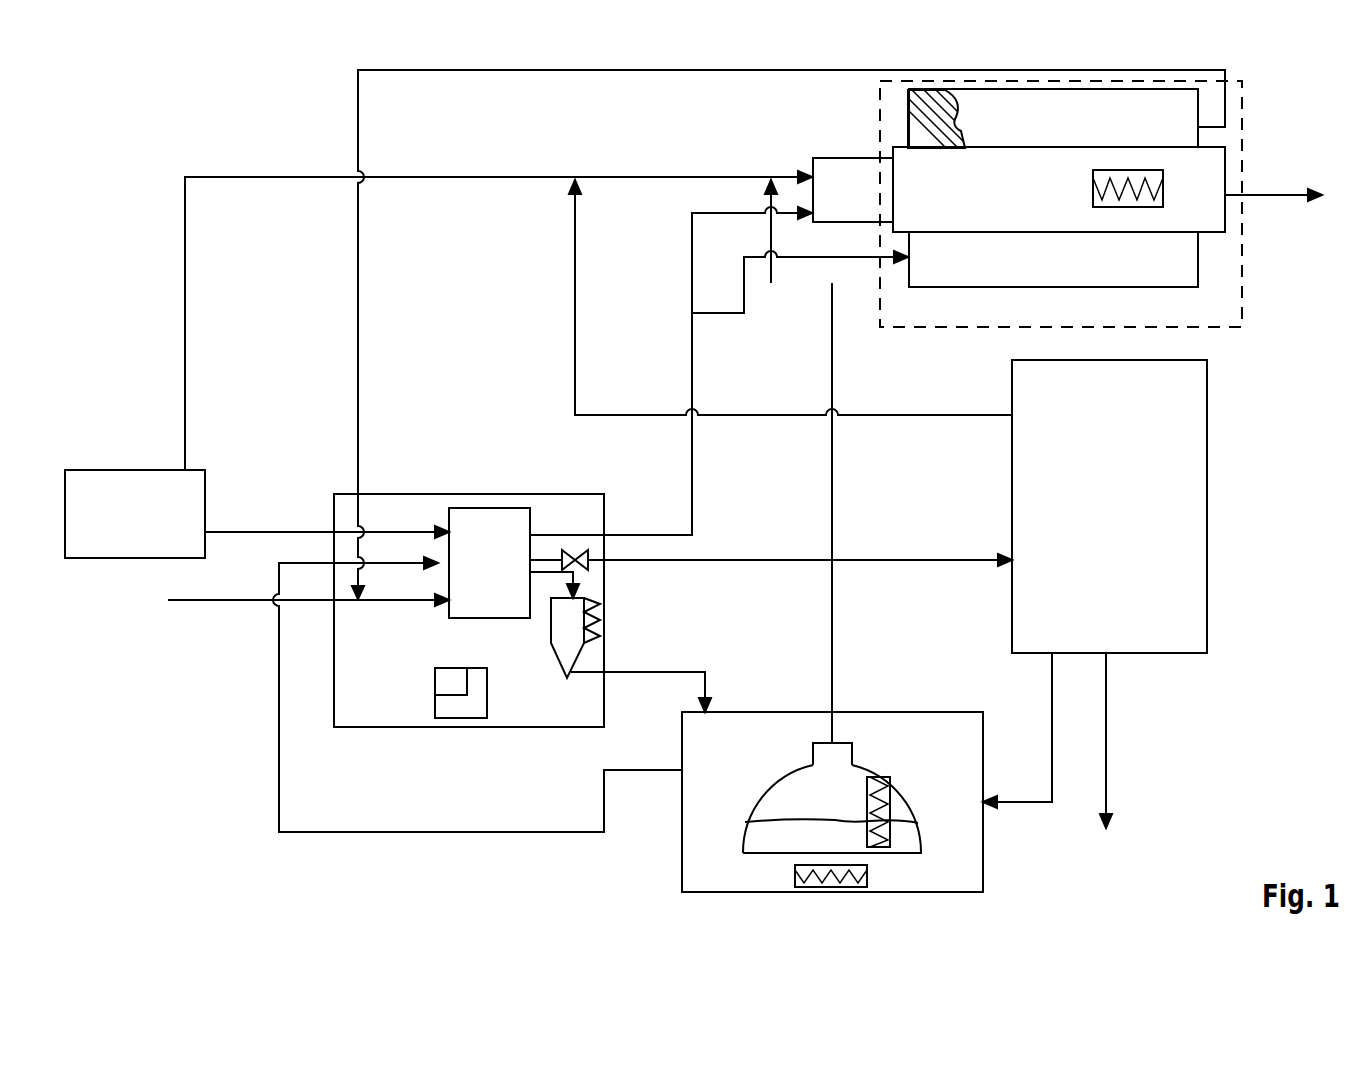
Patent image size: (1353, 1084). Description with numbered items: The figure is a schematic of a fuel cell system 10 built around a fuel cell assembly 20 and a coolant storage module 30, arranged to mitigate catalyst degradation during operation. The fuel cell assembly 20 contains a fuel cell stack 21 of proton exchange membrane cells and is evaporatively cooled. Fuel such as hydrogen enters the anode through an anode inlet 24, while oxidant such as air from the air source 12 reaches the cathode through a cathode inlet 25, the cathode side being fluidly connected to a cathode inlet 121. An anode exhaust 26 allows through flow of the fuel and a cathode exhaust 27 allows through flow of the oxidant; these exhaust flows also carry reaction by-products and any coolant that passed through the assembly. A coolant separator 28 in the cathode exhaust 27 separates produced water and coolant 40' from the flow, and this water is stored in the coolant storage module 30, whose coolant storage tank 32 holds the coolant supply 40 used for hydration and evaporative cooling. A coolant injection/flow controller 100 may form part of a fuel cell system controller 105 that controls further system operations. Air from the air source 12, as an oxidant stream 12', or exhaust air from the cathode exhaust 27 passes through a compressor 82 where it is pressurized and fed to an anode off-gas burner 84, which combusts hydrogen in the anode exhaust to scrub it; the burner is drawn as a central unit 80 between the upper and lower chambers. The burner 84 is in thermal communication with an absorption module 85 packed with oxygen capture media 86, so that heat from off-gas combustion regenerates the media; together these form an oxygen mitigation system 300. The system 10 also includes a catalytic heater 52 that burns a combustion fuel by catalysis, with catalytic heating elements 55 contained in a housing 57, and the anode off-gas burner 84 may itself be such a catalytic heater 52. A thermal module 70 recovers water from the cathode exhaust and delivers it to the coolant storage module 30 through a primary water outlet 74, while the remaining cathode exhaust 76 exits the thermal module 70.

The fuel cell system 10 is at (334, 166).
The air source 12 is at (135, 514).
The oxidant stream 12' is at (498, 320).
The cathode inlet 121 is at (186, 318).
The cathode inlet 25 is at (327, 520).
The anode inlet 24 is at (288, 609).
The fuel cell assembly 20 is at (483, 492).
The fuel cell stack 21 is at (489, 563).
The coolant supply 40 is at (595, 704).
The coolant 40' is at (663, 689).
The anode exhaust 26 is at (692, 440).
The cathode exhaust 27 is at (660, 562).
The coolant separator 28 is at (565, 625).
The coolant injection/flow controller 100 is at (443, 680).
The fuel cell system controller 105 is at (472, 705).
The compressor 82 is at (853, 190).
The oxygen mitigation system 300 is at (900, 332).
The anode off-gas burner 84 is at (1228, 222).
The humidifier 80 is at (1215, 177).
The absorption module 85 is at (1200, 272).
The oxygen capture media 86 is at (940, 120).
The catalytic heating element 55 is at (1128, 185).
The thermal module 70 is at (1109, 506).
The primary water outlet 74 is at (1017, 730).
The cathode exhaust 76 is at (1125, 740).
The coolant storage module 30 is at (832, 802).
The coolant storage tank 32 is at (768, 792).
The housing 57 is at (865, 780).
The catalytic heater 52 is at (910, 833).